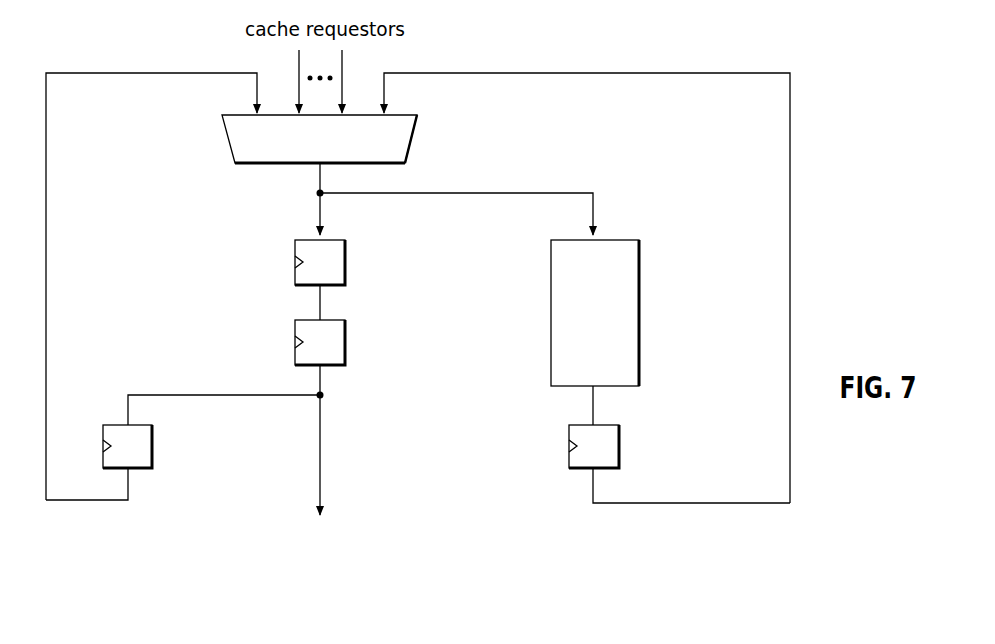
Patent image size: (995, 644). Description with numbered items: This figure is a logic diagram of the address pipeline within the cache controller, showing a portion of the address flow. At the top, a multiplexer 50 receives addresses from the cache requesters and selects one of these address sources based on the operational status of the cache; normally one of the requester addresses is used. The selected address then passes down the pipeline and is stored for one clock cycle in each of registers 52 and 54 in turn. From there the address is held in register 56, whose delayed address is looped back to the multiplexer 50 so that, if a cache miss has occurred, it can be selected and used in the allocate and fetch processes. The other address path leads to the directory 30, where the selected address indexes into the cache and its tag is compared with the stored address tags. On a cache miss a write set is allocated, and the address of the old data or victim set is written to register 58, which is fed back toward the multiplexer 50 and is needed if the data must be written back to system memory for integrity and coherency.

The multiplexer 50 is at (345, 150).
The directory 30 is at (604, 286).
The register 52 is at (295, 250).
The register 54 is at (295, 330).
The register 56 is at (113, 425).
The register 58 is at (569, 435).